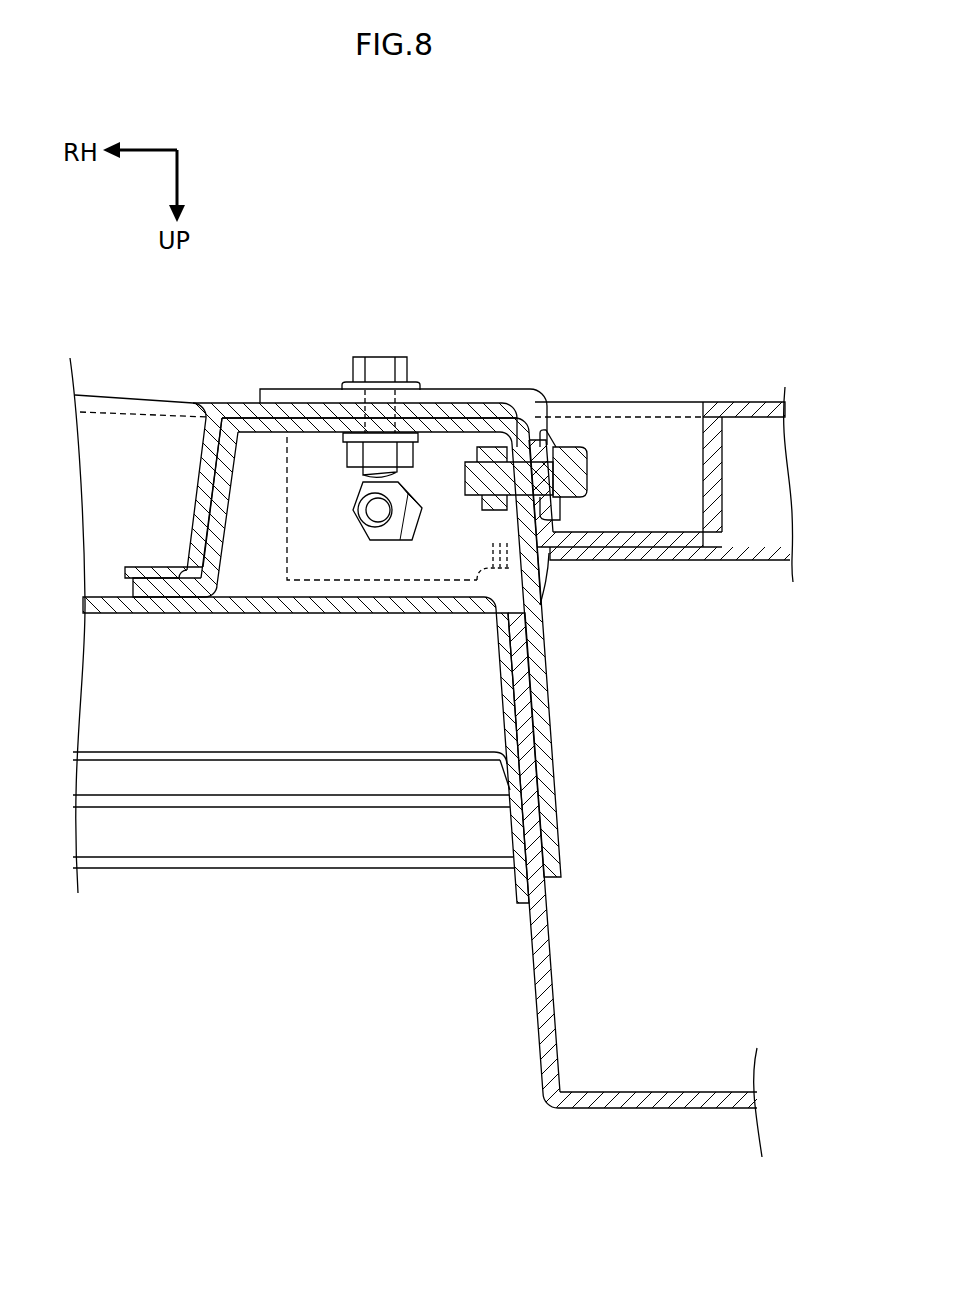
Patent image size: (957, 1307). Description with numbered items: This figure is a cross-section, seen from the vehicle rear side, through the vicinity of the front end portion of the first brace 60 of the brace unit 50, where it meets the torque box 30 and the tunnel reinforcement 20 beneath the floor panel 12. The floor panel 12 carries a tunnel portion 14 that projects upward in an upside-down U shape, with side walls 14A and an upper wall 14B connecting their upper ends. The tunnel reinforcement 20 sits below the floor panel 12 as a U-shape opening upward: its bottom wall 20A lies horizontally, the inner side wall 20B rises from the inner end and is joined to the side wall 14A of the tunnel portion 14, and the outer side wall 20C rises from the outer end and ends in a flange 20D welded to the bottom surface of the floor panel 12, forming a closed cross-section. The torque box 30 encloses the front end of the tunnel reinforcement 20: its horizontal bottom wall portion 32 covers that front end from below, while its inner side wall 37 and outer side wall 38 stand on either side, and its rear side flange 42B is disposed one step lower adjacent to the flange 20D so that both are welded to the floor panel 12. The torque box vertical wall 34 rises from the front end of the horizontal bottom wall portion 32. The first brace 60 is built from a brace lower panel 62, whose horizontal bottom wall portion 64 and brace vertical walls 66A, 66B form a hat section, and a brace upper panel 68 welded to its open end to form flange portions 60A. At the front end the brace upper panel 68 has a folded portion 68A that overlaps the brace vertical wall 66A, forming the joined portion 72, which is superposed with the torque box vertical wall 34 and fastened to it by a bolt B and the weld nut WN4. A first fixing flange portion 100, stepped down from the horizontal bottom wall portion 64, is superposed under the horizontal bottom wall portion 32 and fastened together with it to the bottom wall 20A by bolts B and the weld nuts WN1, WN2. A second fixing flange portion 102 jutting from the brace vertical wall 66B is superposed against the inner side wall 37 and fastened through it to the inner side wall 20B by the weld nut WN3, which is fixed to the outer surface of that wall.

The floor panel 12 is at (133, 618).
The tunnel portion 14 is at (543, 1040).
The side wall 14A is at (541, 985).
The upper wall 14B is at (638, 1109).
The tunnel reinforcement 20 is at (566, 860).
The bottom wall 20A is at (271, 444).
The inner side wall 20B is at (556, 815).
The outer side wall 20C is at (213, 600).
The flange 20D is at (133, 587).
The torque box 30 is at (103, 397).
The horizontal bottom wall portion 32 is at (152, 401).
The torque box vertical wall 34 is at (263, 548).
The inner side wall 37 is at (541, 562).
The outer side wall 38 is at (197, 485).
The rear side flange 42B is at (160, 566).
The brace unit 50 is at (663, 515).
The first brace 60 is at (748, 396).
The flange portion 60A is at (707, 561).
The brace lower panel 62 is at (686, 396).
The horizontal bottom wall portion 64 is at (635, 400).
The brace vertical wall 66A is at (522, 575).
The brace vertical wall 66B is at (693, 475).
The brace upper panel 68 is at (665, 572).
The folded portion 68A is at (473, 613).
The joined portion 72 is at (596, 594).
The first fixing flange portion 100 is at (465, 388).
The second fixing flange portion 102 is at (561, 507).
The bolt B is at (385, 356).
The weld nut WN1 is at (378, 590).
The weld nut WN2 is at (344, 467).
The weld nut WN3 is at (497, 512).
The weld nut WN4 is at (381, 542).